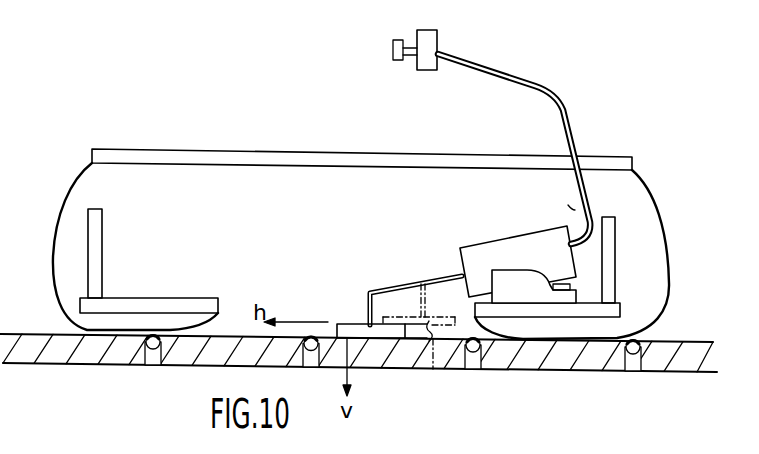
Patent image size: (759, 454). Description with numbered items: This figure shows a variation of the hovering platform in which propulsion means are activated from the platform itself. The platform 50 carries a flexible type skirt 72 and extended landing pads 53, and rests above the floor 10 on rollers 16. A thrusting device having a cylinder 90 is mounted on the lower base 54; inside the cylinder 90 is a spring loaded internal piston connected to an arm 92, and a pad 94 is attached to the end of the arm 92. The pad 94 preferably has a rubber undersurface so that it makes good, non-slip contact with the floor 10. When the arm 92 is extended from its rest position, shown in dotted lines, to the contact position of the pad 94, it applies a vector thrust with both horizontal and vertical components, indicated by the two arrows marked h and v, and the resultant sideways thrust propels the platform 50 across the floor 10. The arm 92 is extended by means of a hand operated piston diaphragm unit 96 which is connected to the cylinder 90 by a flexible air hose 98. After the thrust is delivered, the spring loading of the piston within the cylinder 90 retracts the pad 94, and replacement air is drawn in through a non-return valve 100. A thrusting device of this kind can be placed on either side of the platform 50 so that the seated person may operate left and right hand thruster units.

The floor 10 is at (677, 364).
The rollers 16 is at (155, 366).
The platform 50 is at (597, 155).
The extended landing pads 53 is at (102, 222).
The lower base 54 is at (163, 283).
The flexible type skirt 72 is at (53, 298).
The cylinder 90 is at (559, 272).
The arm 92 is at (433, 281).
The pad 94 is at (373, 338).
The hand operated piston diaphragm unit 96 is at (421, 29).
The flexible air hose 98 is at (546, 85).
The non-return valve 100 is at (566, 207).